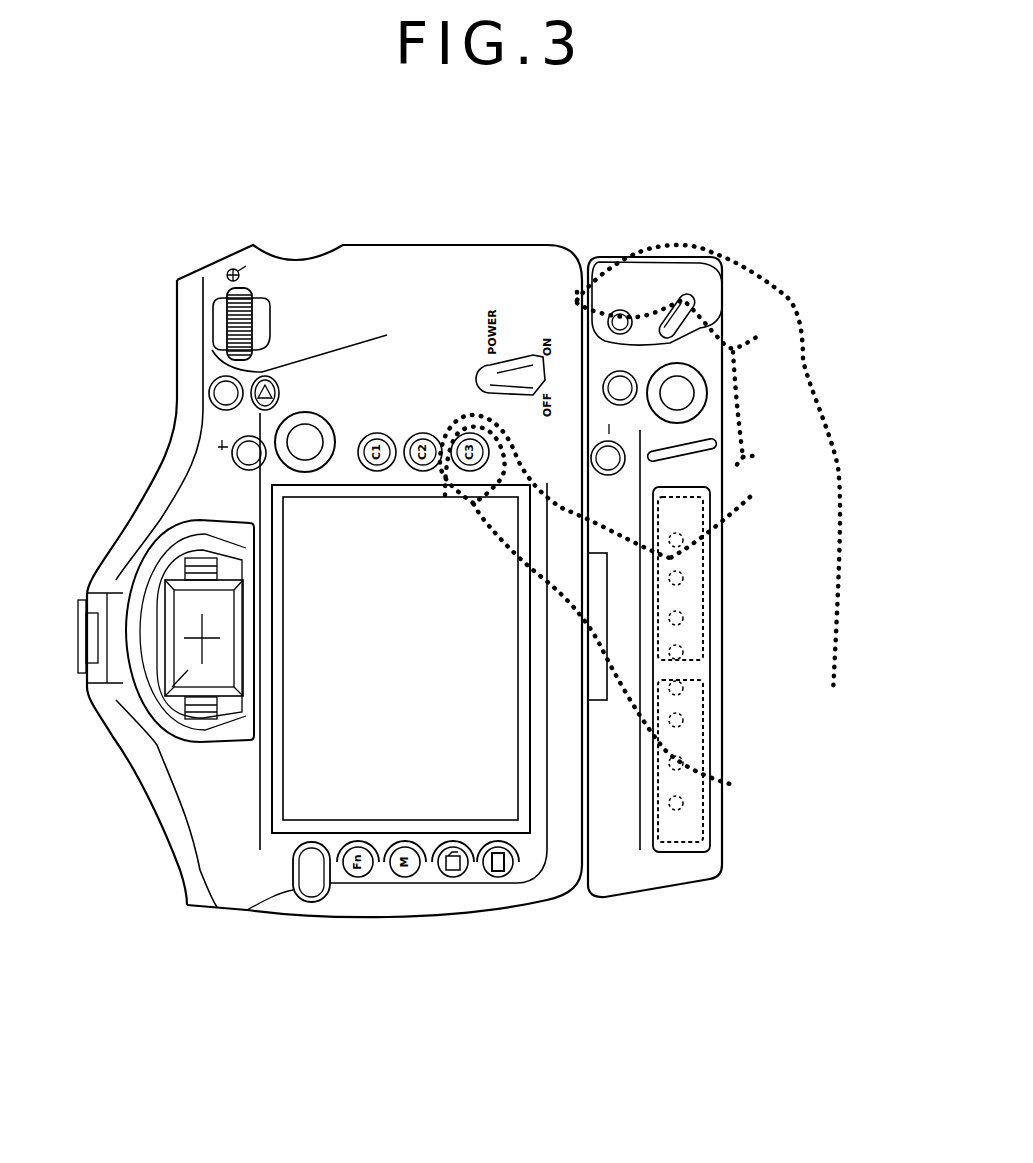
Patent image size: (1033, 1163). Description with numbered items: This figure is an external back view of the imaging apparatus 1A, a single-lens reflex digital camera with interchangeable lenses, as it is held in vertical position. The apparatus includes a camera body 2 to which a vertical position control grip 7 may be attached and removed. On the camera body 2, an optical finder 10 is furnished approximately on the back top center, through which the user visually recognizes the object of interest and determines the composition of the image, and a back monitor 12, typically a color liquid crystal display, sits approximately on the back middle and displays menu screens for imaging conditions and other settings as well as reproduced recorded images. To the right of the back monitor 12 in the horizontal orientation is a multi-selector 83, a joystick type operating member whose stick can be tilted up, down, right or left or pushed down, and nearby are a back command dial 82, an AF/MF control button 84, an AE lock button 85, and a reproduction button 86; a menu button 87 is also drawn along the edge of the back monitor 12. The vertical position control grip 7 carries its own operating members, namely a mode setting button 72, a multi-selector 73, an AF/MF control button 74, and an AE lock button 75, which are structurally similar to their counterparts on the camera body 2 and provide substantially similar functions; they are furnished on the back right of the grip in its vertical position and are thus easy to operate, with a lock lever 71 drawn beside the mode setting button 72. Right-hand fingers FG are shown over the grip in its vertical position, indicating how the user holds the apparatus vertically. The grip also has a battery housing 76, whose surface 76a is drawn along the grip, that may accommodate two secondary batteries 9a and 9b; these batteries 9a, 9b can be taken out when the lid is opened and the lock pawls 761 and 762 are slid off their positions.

The imaging apparatus 1A is at (187, 238).
The camera body 2 is at (173, 830).
The vertical position control grip 7 is at (670, 895).
The optical finder 10 is at (153, 737).
The back monitor 12 is at (320, 783).
The back command dial 82 is at (233, 330).
The multi-selector 83 is at (290, 463).
The AF/MF control button 84 is at (233, 460).
The AE lock button 85 is at (217, 412).
The reproduction button 86 is at (282, 392).
The menu button 87 is at (310, 903).
The lock lever 71 is at (717, 258).
The mode setting button 72 is at (591, 262).
The multi-selector 73 is at (707, 393).
The AF/MF control button 74 is at (628, 468).
The AE lock button 75 is at (634, 402).
The battery housing 76 is at (729, 710).
The operation surface 76a is at (711, 748).
The lock pawl 761 is at (684, 689).
The lock pawl 762 is at (684, 655).
The battery 9a is at (704, 809).
The battery 9b is at (704, 612).
The right-hand fingers FG is at (787, 292).